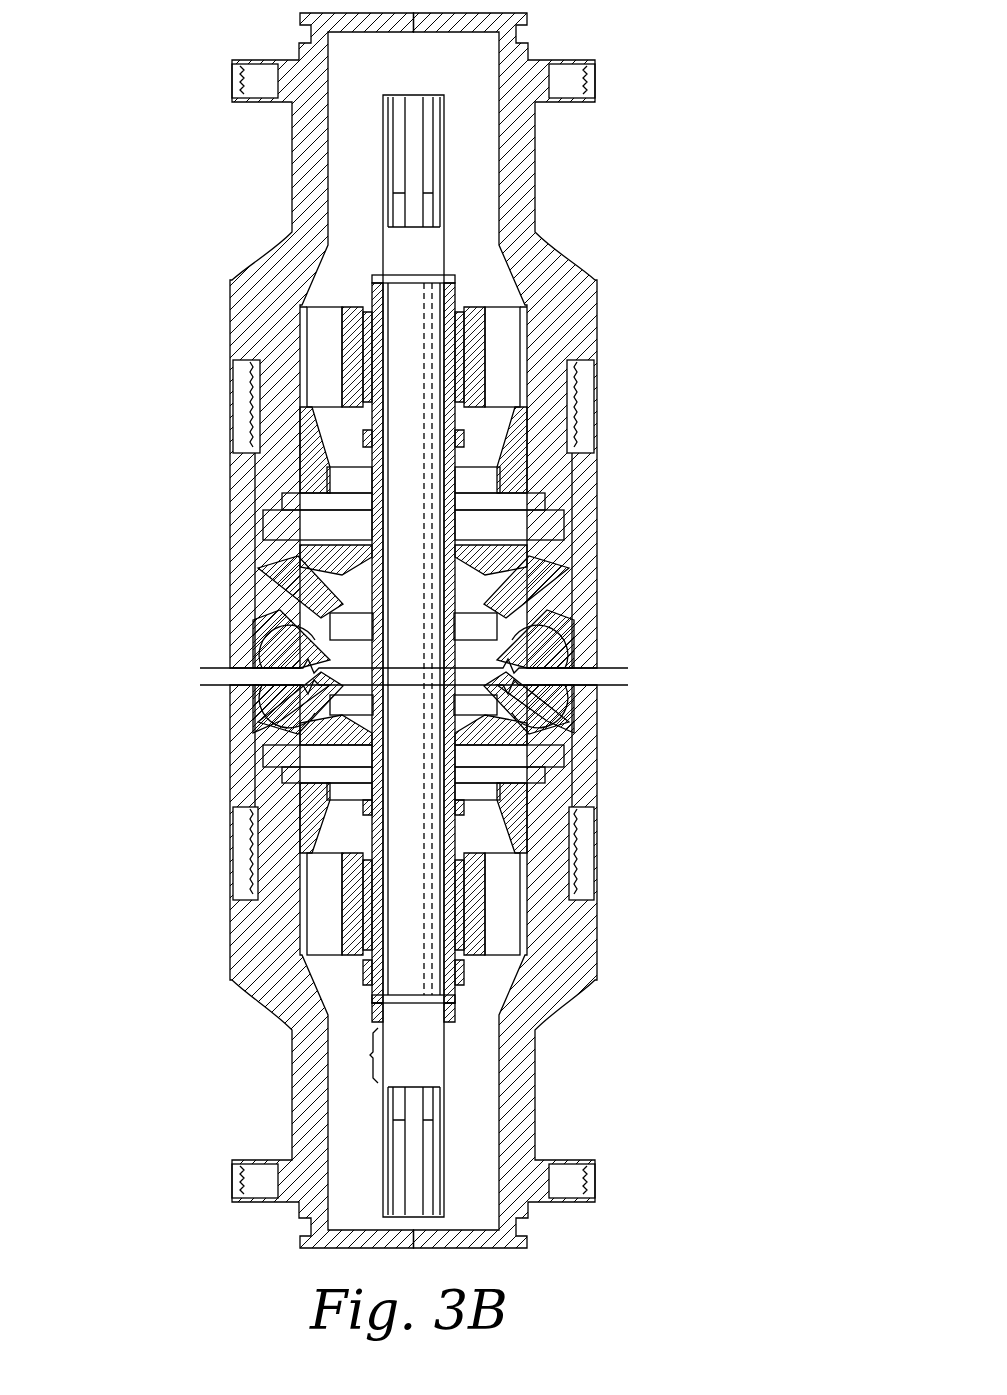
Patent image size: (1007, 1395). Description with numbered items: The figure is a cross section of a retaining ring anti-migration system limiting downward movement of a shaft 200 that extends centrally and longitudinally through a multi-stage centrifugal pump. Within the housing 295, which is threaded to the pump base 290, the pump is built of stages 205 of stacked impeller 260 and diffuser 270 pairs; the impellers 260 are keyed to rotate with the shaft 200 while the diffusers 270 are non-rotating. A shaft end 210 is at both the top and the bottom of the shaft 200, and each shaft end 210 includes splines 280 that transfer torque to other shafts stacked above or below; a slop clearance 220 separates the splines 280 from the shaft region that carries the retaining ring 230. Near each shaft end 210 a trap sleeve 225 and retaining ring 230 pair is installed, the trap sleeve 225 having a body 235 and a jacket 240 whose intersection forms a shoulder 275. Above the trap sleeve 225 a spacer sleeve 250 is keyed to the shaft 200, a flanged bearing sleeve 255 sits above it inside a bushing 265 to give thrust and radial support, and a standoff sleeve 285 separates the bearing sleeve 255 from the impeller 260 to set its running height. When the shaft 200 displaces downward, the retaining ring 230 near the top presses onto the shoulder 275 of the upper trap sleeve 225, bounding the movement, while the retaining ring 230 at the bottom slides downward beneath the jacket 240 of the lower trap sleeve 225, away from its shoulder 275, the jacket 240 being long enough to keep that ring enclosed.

The shaft 200 is at (432, 581).
The stages 205 is at (306, 570).
The shaft end 210 is at (460, 1102).
The slop clearance 220 is at (372, 1055).
The trap sleeve 225 is at (459, 985).
The retaining ring 230 is at (412, 1007).
The body 235 is at (372, 968).
The jacket 240 is at (382, 997).
The spacer sleeve 250 is at (365, 915).
The bearing sleeve 255 is at (362, 880).
The impeller 260 is at (548, 752).
The bushing 265 is at (457, 887).
The diffuser 270 is at (508, 714).
The shoulder 275 is at (466, 972).
The splines 280 is at (437, 1145).
The standoff sleeve 285 is at (363, 805).
The pump base 290 is at (305, 1122).
The housing 295 is at (588, 565).